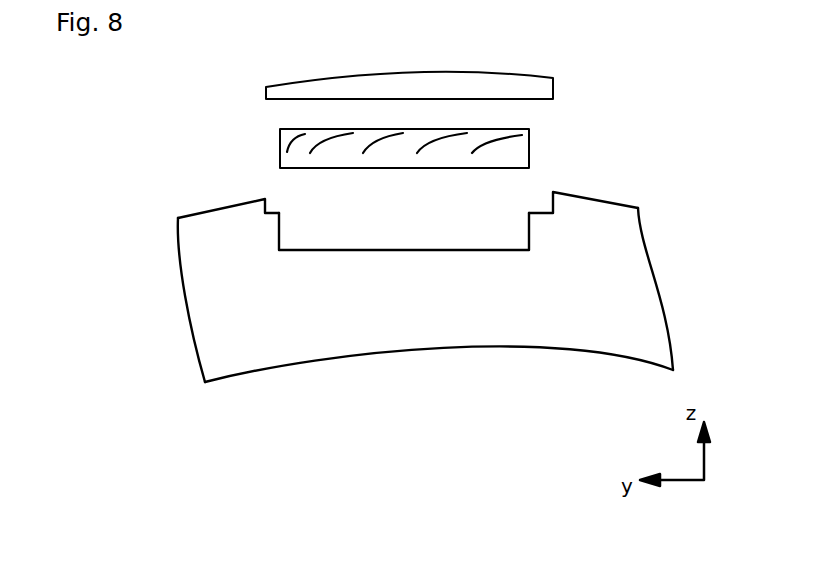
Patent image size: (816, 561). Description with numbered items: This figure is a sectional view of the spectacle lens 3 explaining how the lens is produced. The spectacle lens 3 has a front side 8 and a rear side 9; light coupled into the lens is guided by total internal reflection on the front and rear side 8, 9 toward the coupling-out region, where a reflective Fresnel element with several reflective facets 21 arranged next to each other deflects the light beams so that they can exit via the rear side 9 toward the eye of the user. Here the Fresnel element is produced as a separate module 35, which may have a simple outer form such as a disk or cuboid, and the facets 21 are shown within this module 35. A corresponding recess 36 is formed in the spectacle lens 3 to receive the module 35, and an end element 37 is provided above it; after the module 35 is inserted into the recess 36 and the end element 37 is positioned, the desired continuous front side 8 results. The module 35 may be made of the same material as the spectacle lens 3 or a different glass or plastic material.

The spectacle lens 3 is at (266, 353).
The front side 8 is at (618, 205).
The rear side 9 is at (575, 353).
The reflective facets 21 is at (290, 147).
The module 35 is at (280, 143).
The recess 36 is at (493, 250).
The end element 37 is at (266, 91).